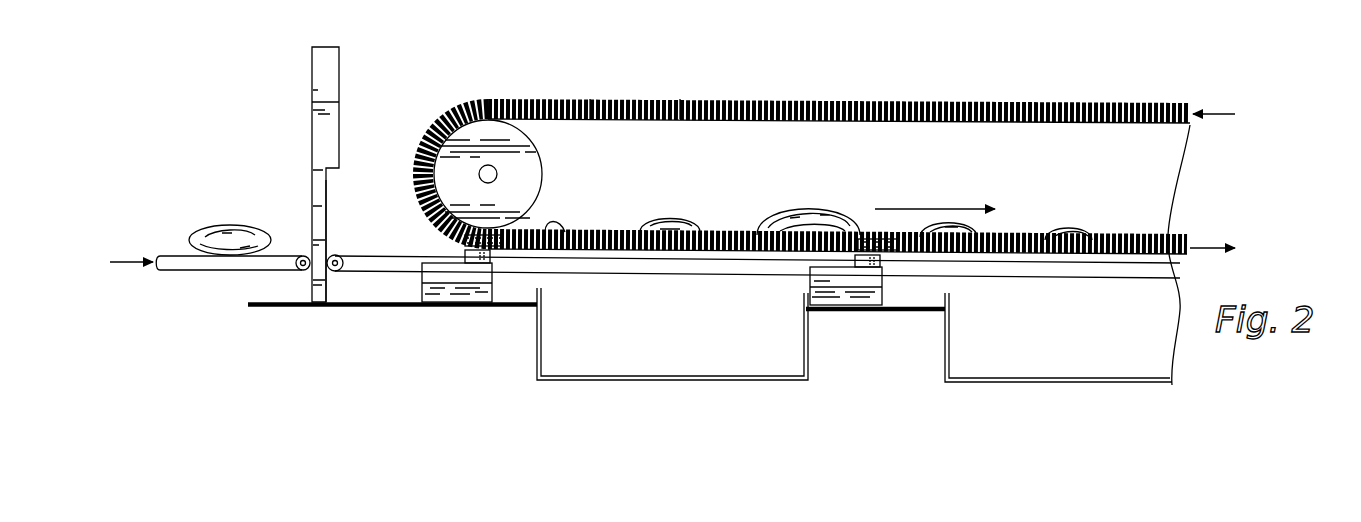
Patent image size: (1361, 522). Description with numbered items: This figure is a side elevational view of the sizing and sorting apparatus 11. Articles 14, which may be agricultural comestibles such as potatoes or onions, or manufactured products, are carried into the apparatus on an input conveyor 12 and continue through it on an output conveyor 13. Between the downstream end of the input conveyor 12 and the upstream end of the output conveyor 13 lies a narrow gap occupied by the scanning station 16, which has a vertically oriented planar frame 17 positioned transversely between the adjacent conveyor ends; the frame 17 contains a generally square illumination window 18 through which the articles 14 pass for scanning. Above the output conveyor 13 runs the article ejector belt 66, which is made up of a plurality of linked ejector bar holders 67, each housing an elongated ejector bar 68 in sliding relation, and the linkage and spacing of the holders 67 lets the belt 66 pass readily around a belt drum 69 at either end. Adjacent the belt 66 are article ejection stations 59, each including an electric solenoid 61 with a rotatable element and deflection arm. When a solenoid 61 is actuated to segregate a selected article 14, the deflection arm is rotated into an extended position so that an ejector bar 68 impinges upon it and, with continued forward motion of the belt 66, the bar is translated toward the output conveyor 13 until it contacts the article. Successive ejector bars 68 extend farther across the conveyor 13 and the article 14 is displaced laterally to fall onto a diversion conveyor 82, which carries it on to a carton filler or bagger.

The apparatus 11 is at (1158, 82).
The input conveyor 12 is at (194, 272).
The output conveyor 13 is at (360, 257).
The articles 14 is at (236, 226).
The scanning station 16 is at (350, 78).
The planar frame 17 is at (327, 290).
The illumination window 18 is at (334, 214).
The article ejection station 59 is at (480, 320).
The electric solenoid 61 is at (460, 292).
The article ejector belt 66 is at (926, 98).
The ejector bar holders 67 is at (588, 98).
The ejector bar 68 is at (677, 98).
The belt drum 69 is at (545, 178).
The diversion conveyor 82 is at (626, 380).